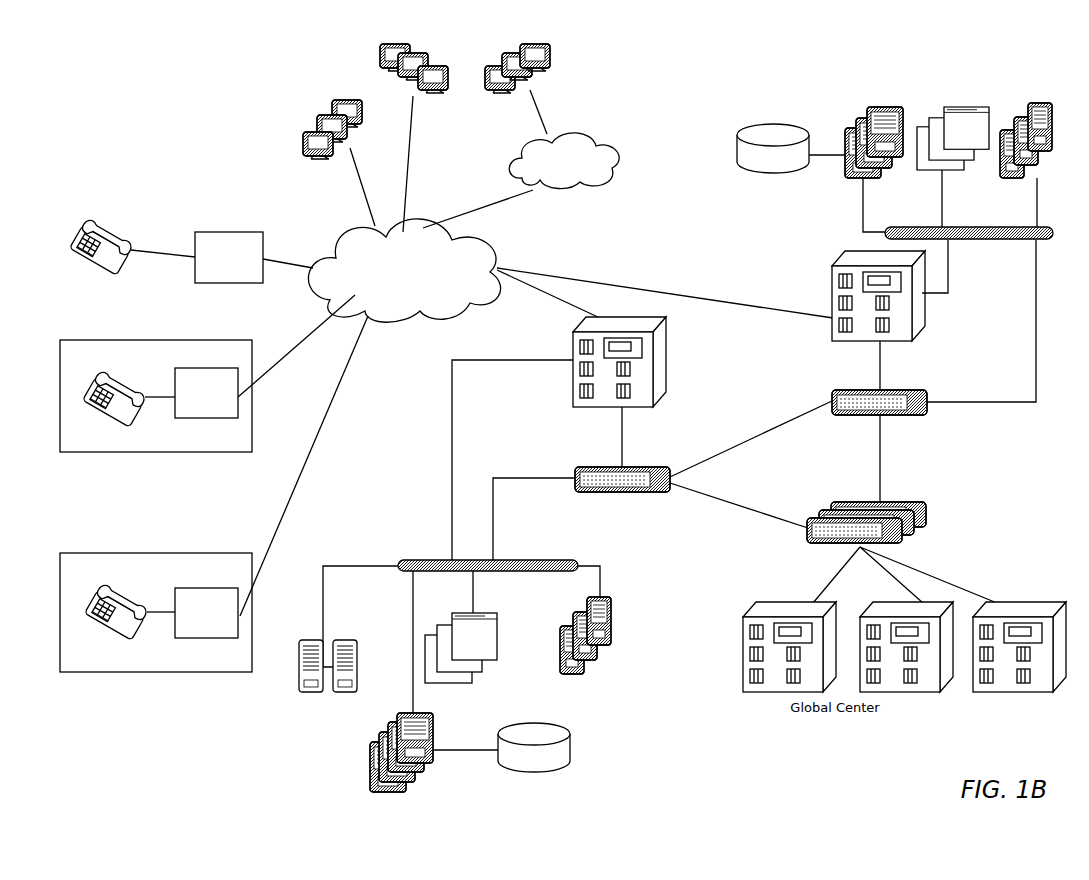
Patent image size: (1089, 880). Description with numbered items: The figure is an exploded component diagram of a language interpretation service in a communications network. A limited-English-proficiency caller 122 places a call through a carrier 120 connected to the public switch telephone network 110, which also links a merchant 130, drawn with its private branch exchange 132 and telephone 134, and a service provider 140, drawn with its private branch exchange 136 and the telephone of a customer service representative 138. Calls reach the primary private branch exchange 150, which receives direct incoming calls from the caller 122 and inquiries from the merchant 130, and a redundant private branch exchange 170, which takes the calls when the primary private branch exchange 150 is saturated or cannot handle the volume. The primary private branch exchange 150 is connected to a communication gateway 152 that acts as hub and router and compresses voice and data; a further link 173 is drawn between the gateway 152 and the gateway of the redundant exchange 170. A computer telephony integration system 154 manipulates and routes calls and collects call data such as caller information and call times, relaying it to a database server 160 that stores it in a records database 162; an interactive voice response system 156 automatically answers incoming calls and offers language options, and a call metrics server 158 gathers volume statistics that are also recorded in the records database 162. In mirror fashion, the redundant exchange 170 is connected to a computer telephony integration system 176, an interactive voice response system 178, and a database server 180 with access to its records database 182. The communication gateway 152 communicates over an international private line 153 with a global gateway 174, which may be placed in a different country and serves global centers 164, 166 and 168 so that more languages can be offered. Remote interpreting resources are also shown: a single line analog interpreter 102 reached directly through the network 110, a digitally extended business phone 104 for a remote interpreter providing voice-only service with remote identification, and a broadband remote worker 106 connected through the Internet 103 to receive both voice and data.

The single line analog interpreter 102 is at (303, 145).
The Internet 103 is at (620, 162).
The digitally extended business phone 104 is at (430, 96).
The remote worker 106 is at (552, 62).
The public switch telephone network 110 is at (486, 250).
The carrier 120 is at (214, 232).
The LEP caller 122 is at (104, 222).
The merchant 130 is at (207, 384).
The PBX 132 is at (207, 369).
The telephone 134 is at (110, 370).
The PBX 136 is at (193, 588).
The customer service representative 138 is at (110, 582).
The service provider 140 is at (214, 504).
The primary private branch exchange 150 is at (667, 328).
The communication gateway 152 is at (640, 464).
The international private line 153 is at (714, 494).
The computer telephony integration system 154 is at (611, 630).
The interactive voice response system 156 is at (481, 614).
The call metrics server 158 is at (348, 640).
The database server 160 is at (370, 750).
The records database 162 is at (571, 748).
The global center 164 is at (752, 697).
The global center 166 is at (923, 695).
The global center 168 is at (1037, 695).
The redundant private branch exchange 170 is at (833, 298).
The communication link 173 is at (774, 428).
The global gateway 174 is at (908, 503).
The computer telephony integration system 176 is at (1040, 105).
The interactive voice response system 178 is at (970, 108).
The database server 180 is at (892, 107).
The records database 182 is at (777, 122).